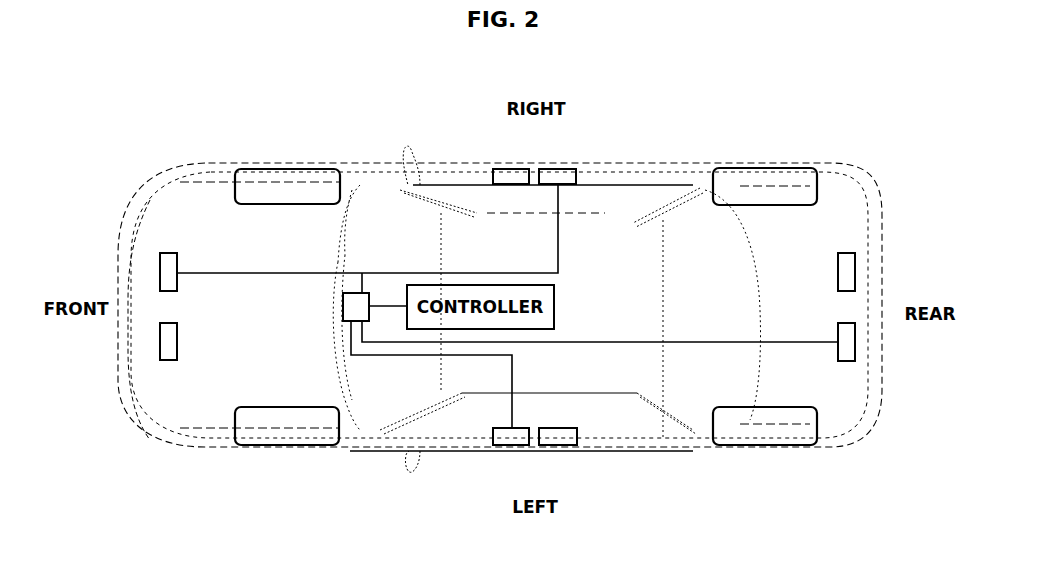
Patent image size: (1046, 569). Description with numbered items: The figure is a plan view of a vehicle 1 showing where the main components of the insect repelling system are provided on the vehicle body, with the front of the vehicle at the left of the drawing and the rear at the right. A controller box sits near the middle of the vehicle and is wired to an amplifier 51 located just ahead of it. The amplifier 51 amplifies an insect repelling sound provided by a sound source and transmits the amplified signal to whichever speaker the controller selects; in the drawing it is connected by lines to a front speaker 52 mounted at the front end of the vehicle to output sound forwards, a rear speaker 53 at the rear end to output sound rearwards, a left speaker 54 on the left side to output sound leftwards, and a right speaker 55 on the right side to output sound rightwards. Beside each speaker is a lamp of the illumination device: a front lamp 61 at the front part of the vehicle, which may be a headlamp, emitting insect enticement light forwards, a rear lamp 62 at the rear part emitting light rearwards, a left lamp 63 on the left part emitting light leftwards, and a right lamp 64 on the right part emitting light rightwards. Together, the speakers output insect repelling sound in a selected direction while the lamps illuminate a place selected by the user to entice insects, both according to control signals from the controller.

The vehicle 1 is at (200, 146).
The amplifier 51 is at (351, 293).
The front speaker 52 is at (160, 262).
The rear speaker 53 is at (855, 347).
The left speaker 54 is at (504, 446).
The right speaker 55 is at (560, 169).
The front lamp 61 is at (160, 343).
The rear lamp 62 is at (855, 268).
The left lamp 63 is at (560, 446).
The right lamp 64 is at (506, 169).